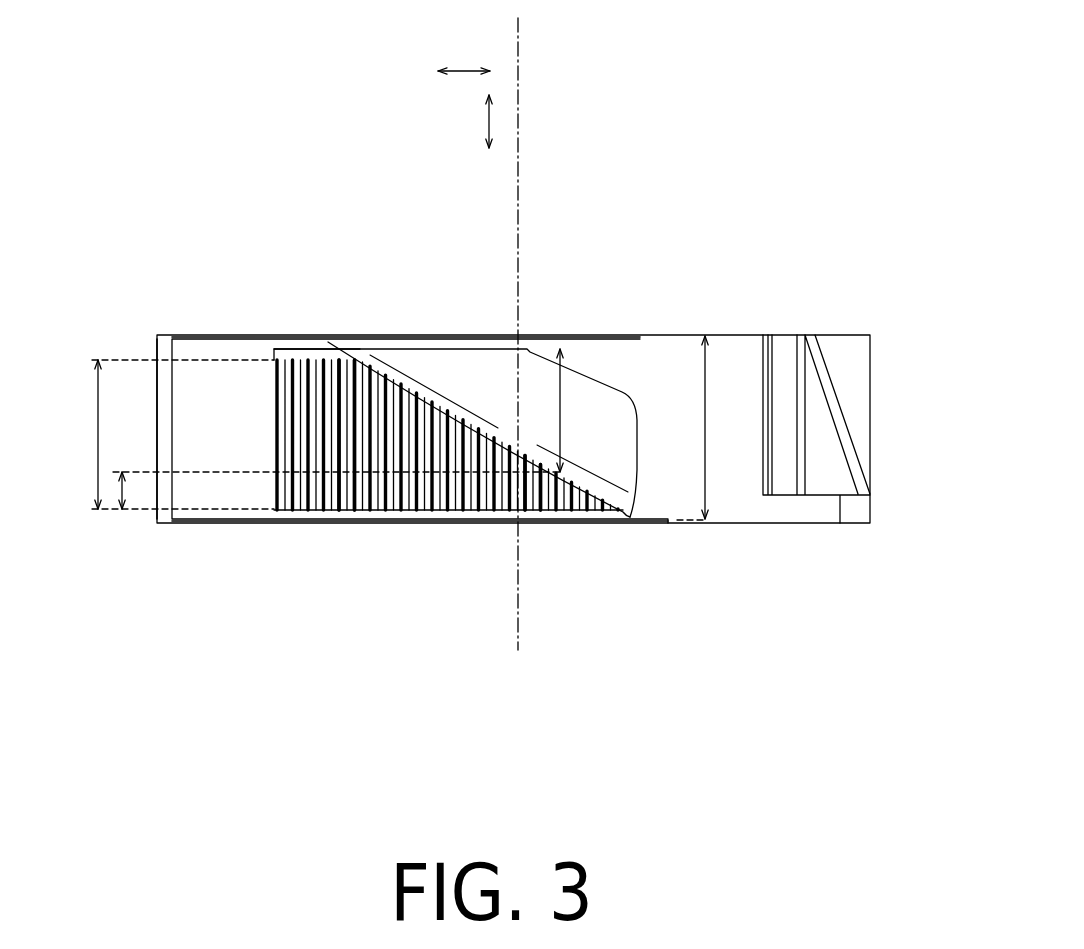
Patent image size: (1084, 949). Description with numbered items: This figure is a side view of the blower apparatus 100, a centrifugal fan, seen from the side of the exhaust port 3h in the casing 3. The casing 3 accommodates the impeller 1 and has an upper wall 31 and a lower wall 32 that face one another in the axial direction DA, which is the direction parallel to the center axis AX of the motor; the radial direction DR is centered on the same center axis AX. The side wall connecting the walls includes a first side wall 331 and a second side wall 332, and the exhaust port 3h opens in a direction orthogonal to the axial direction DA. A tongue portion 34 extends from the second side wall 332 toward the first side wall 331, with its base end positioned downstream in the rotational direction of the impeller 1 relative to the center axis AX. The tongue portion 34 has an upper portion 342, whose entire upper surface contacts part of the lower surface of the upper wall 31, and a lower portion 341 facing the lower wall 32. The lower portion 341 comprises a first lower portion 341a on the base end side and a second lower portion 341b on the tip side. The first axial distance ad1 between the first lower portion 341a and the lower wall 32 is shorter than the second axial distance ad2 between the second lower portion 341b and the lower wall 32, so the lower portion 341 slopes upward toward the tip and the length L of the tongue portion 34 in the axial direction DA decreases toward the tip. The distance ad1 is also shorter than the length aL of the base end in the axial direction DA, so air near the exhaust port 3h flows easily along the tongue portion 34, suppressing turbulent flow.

The blower apparatus 100 is at (760, 207).
The impeller 1 is at (273, 348).
The casing 3 is at (873, 330).
The upper wall 31 is at (178, 334).
The lower wall 32 is at (260, 527).
The first side wall 331 is at (152, 341).
The second side wall 332 is at (770, 425).
The tongue portion 34 is at (604, 485).
The lower portion 341 is at (495, 245).
The first lower portion 341a is at (535, 465).
The second lower portion 341b is at (355, 354).
The upper portion 342 is at (328, 344).
The exhaust port 3h is at (195, 443).
The first axial distance ad1 is at (120, 495).
The second axial distance ad2 is at (98, 440).
The length of the tongue portion in the axial direction L is at (565, 410).
The length of the base end of the tongue portion in the axial direction aL is at (708, 421).
The radial direction DR is at (463, 70).
The axial direction DA is at (485, 122).
The center axis AX is at (520, 62).